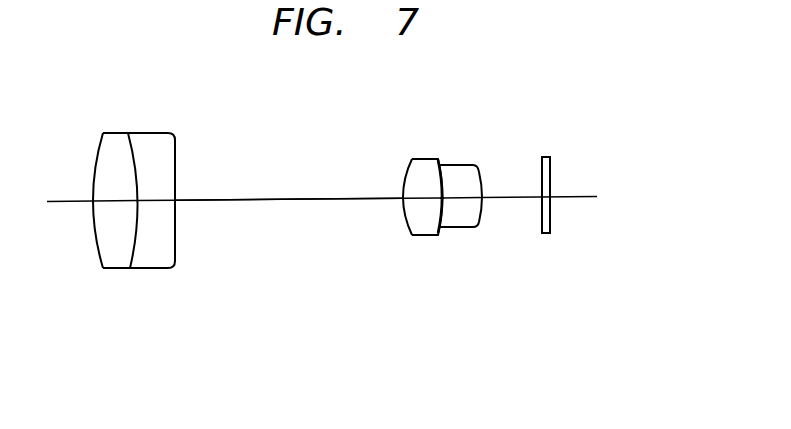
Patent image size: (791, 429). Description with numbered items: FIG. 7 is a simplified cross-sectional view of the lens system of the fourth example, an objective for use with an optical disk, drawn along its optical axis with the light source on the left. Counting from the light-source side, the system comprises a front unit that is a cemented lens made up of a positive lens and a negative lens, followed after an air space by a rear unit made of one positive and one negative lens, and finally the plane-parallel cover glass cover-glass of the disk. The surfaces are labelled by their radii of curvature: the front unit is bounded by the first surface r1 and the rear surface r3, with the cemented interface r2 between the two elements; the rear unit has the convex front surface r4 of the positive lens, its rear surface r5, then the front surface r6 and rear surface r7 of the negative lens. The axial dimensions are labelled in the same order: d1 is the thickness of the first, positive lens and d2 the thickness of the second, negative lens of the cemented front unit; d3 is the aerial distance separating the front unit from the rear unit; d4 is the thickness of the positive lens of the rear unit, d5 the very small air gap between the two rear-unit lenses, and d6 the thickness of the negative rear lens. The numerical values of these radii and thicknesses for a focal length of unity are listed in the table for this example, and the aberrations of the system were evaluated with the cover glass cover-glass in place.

The radius of curvature of first surface r1 is at (102, 142).
The radius of curvature of second surface r2 is at (134, 142).
The radius of curvature of third surface r3 is at (175, 148).
The radius of curvature of fourth surface r4 is at (407, 170).
The radius of curvature of fifth surface r5 is at (440, 173).
The radius of curvature of sixth surface r6 is at (448, 180).
The radius of curvature of seventh surface r7 is at (482, 180).
The thickness of first lens d1 is at (113, 202).
The thickness of second lens d2 is at (155, 202).
The aerial distance between front and rear units d3 is at (287, 200).
The thickness of third lens d4 is at (422, 198).
The aerial distance between third and fourth lenses d5 is at (448, 203).
The thickness of fourth lens d6 is at (463, 198).
The cover glass cover-glass is at (545, 157).